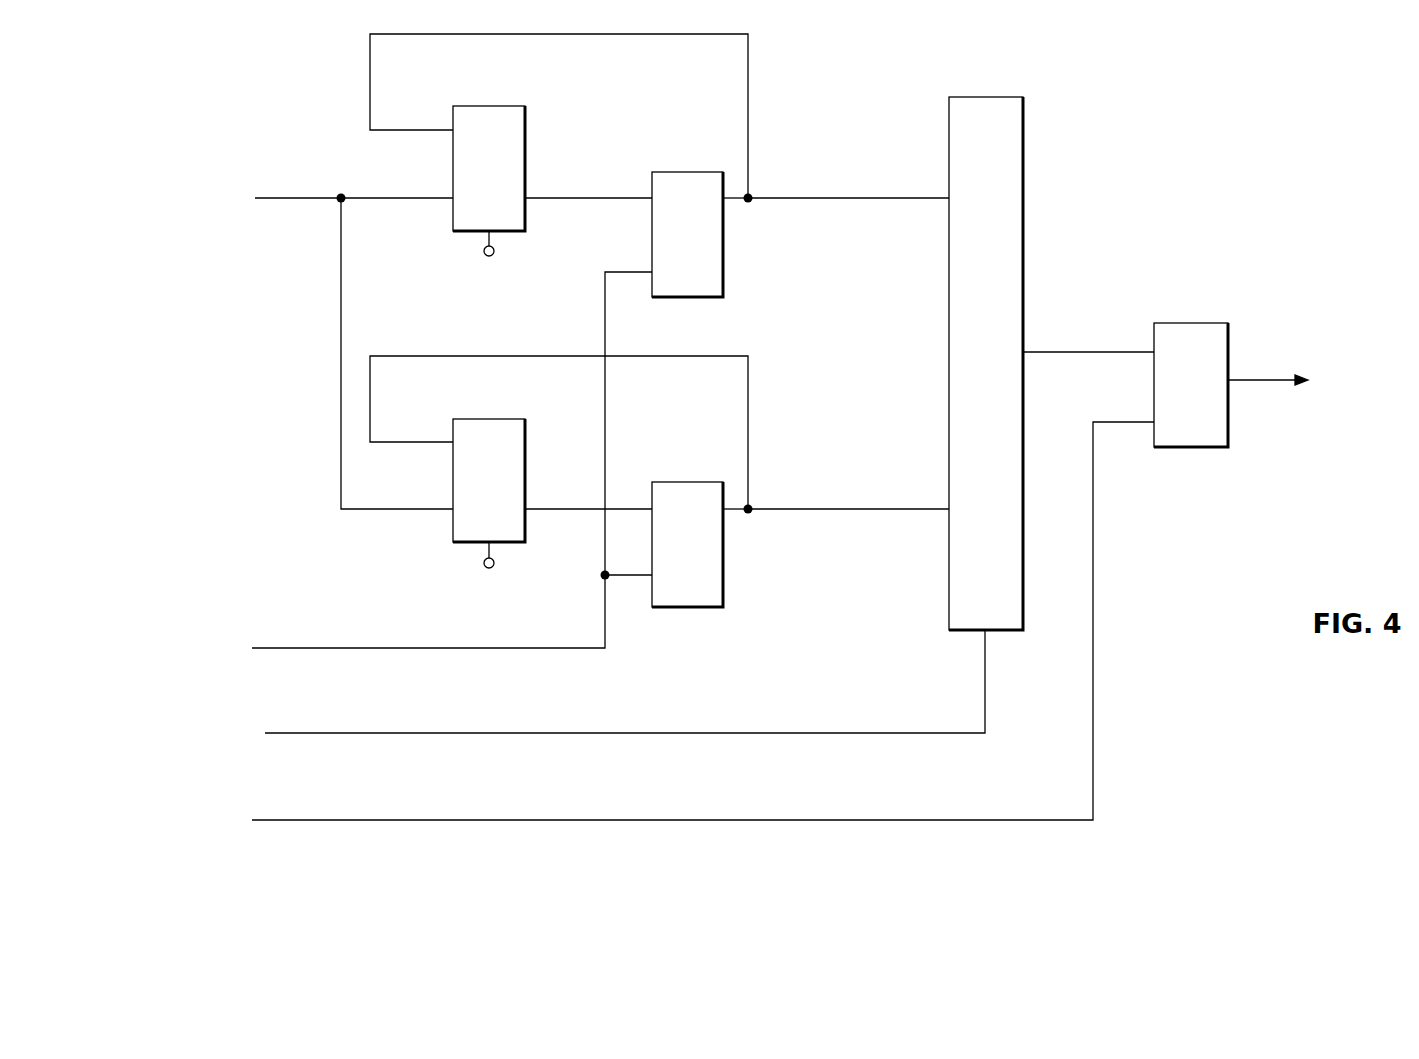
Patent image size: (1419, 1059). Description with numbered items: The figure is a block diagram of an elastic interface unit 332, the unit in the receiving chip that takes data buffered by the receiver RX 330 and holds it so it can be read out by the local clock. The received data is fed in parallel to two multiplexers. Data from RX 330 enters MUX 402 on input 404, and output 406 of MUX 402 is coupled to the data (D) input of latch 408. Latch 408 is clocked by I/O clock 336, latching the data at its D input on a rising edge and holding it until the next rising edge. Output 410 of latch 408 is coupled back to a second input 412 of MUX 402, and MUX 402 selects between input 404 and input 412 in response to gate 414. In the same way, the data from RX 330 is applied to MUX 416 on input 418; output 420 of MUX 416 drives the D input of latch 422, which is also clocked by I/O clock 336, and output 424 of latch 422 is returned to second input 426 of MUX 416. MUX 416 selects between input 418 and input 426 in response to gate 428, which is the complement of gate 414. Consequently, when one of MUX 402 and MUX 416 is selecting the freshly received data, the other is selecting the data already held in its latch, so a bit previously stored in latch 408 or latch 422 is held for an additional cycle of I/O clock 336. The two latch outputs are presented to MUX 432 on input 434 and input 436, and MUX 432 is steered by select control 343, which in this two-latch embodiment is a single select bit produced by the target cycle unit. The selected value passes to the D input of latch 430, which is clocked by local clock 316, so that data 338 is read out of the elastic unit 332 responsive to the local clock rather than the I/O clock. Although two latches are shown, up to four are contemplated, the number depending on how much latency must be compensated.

The receiver 330 is at (266, 196).
The MUX 402 is at (489, 105).
The input 404 is at (417, 197).
The output 406 is at (559, 197).
The latch 408 is at (684, 171).
The output 410 is at (724, 200).
The input 412 is at (401, 129).
The gate 414 is at (488, 269).
The MUX 416 is at (489, 418).
The input 418 is at (417, 508).
The output 420 is at (559, 508).
The latch 422 is at (684, 481).
The output 424 is at (724, 511).
The input 426 is at (401, 441).
The gate 428 is at (488, 580).
The latch 430 is at (1188, 322).
The MUX 432 is at (993, 97).
The input 434 is at (949, 197).
The input 436 is at (949, 508).
The data 338 is at (1270, 378).
The I/O clock 336 is at (419, 475).
The select control 343 is at (579, 700).
The slave local clock 316 is at (670, 639).
The elastic interface unit 332 is at (1163, 618).